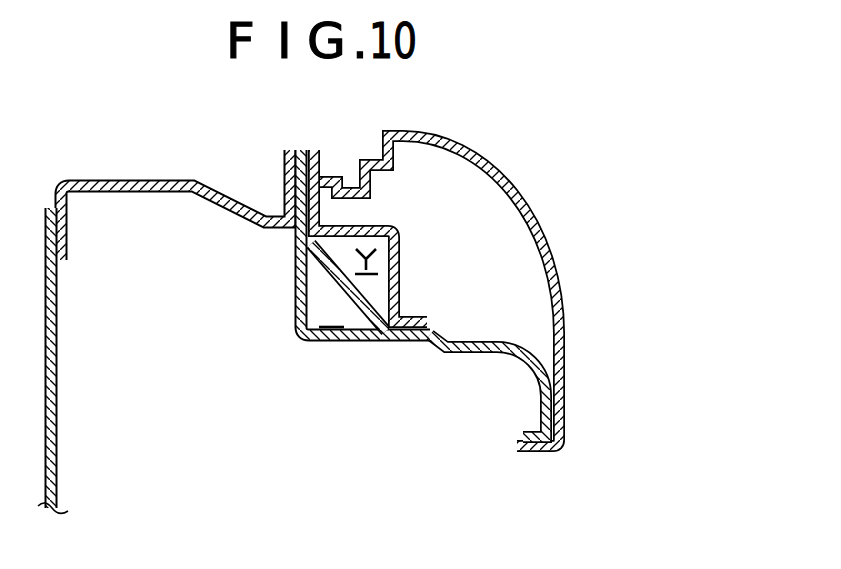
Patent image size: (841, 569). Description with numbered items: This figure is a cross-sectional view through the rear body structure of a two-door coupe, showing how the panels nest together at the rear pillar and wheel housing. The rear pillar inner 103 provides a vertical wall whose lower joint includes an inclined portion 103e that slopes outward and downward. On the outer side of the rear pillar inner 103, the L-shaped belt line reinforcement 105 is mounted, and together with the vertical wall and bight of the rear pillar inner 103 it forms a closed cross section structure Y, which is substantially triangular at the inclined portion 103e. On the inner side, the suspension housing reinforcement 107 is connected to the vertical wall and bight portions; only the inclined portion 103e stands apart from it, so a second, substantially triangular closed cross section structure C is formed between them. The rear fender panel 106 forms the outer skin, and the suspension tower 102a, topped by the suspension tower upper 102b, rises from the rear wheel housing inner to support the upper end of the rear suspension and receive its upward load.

The suspension tower 102a is at (62, 381).
The suspension tower upper 102b is at (148, 181).
The rear pillar inner 103 is at (484, 357).
The inclined portion 103e is at (325, 280).
The belt line reinforcement 105 is at (400, 250).
The rear fender panel 106 is at (510, 168).
The suspension housing reinforcement 107 is at (317, 344).